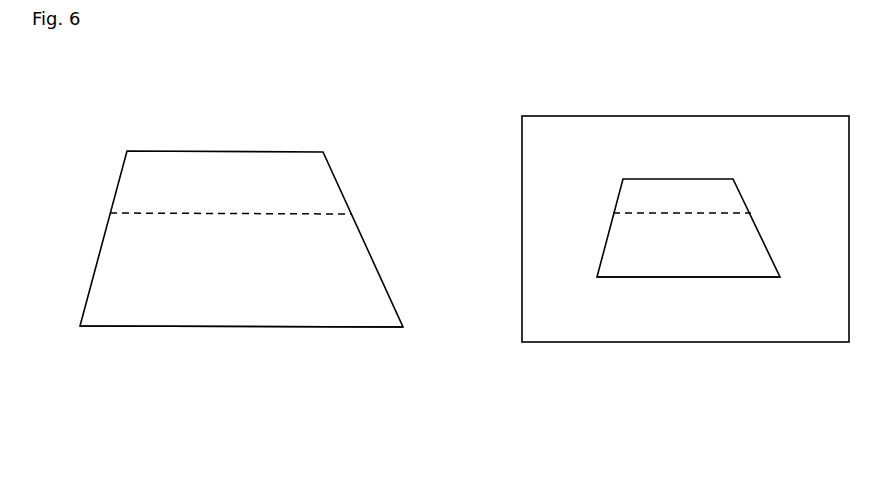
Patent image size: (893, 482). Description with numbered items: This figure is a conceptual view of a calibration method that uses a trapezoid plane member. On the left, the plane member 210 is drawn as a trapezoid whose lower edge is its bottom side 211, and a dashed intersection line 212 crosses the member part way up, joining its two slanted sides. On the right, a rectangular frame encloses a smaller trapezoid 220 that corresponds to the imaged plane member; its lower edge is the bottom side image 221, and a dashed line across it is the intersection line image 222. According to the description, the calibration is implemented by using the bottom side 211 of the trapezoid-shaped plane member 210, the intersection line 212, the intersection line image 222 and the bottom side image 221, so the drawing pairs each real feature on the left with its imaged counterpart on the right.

The plane member 210 is at (196, 336).
The bottom side 211 is at (296, 328).
The intersection line 212 is at (213, 213).
The second trapezoidal region 220 is at (656, 286).
The bottom side image 221 is at (727, 278).
The intersection line image 222 is at (669, 213).